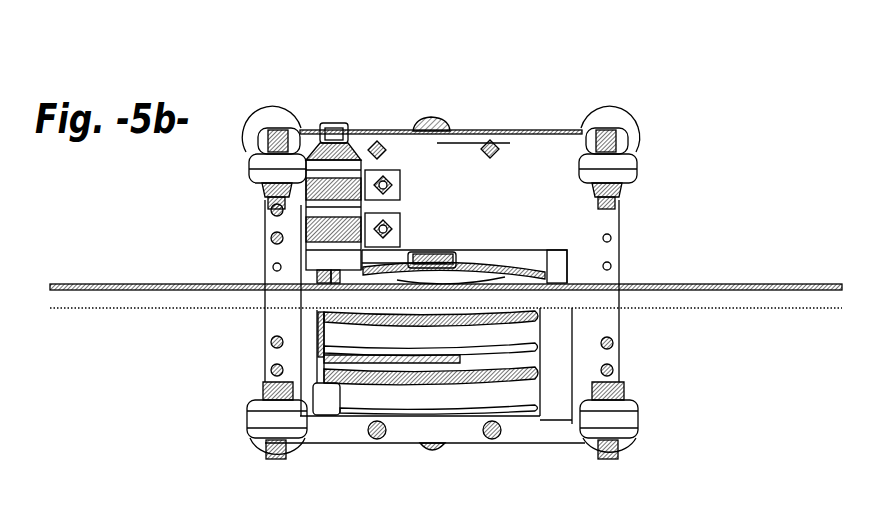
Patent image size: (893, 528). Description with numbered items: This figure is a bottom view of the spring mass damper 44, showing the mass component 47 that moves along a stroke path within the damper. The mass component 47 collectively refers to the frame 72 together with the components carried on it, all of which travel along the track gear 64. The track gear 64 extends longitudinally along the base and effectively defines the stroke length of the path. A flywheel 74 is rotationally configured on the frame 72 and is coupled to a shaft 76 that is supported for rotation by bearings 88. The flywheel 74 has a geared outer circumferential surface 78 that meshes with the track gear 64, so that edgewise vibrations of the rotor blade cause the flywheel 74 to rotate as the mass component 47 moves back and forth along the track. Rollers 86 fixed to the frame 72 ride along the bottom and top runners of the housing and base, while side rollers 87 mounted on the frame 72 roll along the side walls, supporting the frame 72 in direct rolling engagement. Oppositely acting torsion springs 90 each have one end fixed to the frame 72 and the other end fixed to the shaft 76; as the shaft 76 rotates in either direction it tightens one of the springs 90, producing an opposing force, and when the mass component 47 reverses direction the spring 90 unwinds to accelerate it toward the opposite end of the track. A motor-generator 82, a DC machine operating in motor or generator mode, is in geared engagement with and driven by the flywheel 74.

The spring mass damper 44 is at (747, 80).
The mass component 47 is at (179, 213).
The track gear 64 is at (201, 285).
The frame 72 is at (475, 221).
The flywheel 74 is at (500, 270).
The shaft 76 is at (433, 120).
The geared outer circumferential surface 78 is at (540, 280).
The motor-generator 82 is at (312, 228).
The rollers 86 is at (250, 178).
The side rollers 87 is at (592, 120).
The bearings 88 is at (250, 417).
The torsion springs 90 is at (523, 332).